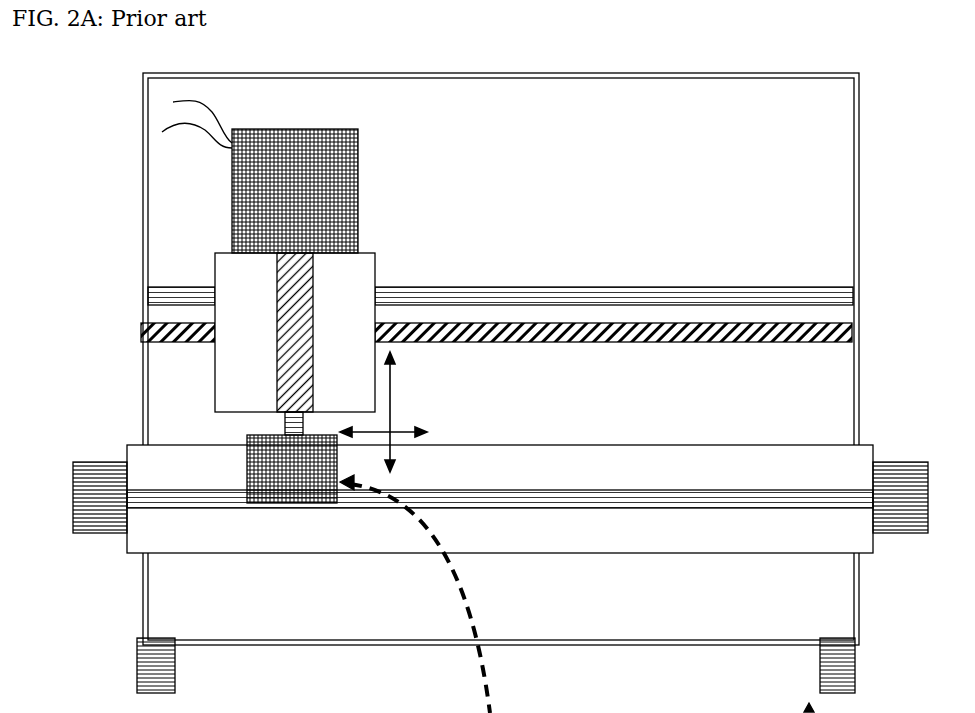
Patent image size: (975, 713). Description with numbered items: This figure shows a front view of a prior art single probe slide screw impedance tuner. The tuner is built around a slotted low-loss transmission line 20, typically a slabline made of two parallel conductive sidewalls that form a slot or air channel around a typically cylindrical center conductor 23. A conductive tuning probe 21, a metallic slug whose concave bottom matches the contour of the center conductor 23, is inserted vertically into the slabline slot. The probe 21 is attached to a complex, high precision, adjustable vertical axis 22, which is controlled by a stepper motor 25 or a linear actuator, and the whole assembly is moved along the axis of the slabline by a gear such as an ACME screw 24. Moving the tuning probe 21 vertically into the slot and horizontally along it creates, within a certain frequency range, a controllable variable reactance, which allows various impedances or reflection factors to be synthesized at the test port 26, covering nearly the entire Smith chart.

The slotted low-loss transmission line 20 is at (698, 540).
The tuning probe 21 is at (287, 492).
The adjustable vertical axis 22 is at (272, 300).
The center conductor 23 is at (565, 505).
The ACME screw 24 is at (512, 318).
The stepper motor 25 is at (332, 127).
The test port 26 is at (73, 457).